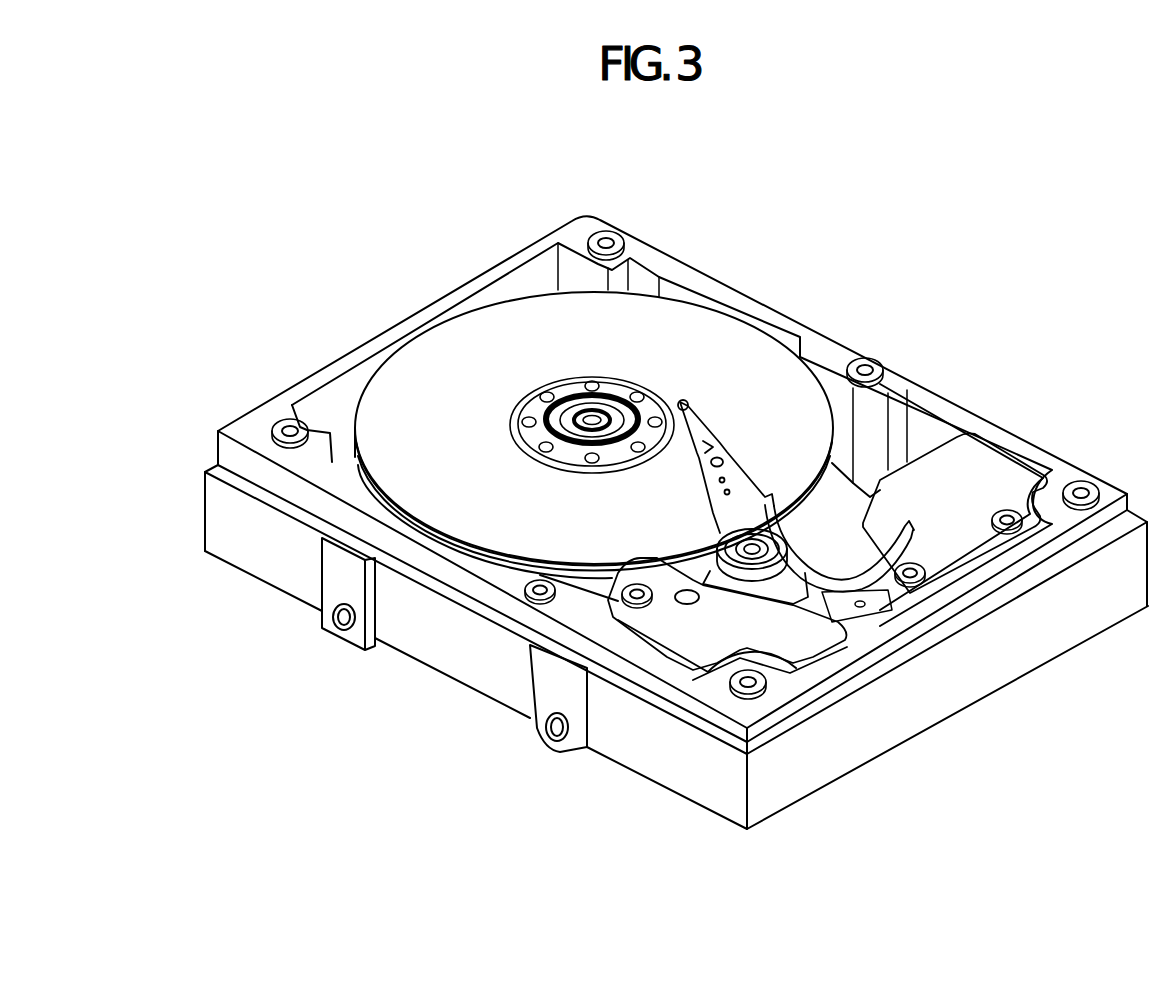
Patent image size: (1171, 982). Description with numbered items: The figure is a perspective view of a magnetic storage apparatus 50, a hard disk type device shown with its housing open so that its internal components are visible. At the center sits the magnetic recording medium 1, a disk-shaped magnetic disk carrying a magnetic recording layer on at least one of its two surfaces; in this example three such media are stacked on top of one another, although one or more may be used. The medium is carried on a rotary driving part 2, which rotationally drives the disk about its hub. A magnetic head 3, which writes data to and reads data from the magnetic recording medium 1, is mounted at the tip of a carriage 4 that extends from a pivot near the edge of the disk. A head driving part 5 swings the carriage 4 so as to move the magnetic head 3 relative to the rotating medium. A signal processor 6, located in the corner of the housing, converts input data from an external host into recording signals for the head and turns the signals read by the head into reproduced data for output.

The magnetic storage apparatus 50 is at (581, 127).
The magnetic recording medium 1 is at (663, 343).
The rotary driving part 2 is at (562, 382).
The magnetic head 3 is at (684, 402).
The carriage 4 is at (748, 467).
The head driving part 5 is at (790, 607).
The signal processor 6 is at (981, 487).